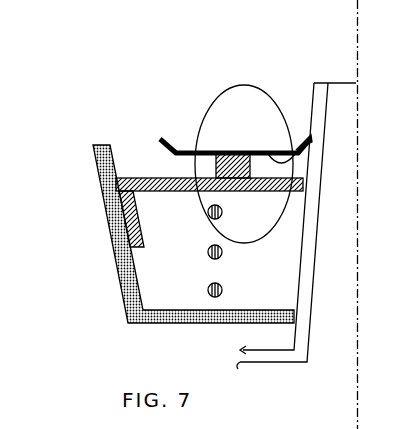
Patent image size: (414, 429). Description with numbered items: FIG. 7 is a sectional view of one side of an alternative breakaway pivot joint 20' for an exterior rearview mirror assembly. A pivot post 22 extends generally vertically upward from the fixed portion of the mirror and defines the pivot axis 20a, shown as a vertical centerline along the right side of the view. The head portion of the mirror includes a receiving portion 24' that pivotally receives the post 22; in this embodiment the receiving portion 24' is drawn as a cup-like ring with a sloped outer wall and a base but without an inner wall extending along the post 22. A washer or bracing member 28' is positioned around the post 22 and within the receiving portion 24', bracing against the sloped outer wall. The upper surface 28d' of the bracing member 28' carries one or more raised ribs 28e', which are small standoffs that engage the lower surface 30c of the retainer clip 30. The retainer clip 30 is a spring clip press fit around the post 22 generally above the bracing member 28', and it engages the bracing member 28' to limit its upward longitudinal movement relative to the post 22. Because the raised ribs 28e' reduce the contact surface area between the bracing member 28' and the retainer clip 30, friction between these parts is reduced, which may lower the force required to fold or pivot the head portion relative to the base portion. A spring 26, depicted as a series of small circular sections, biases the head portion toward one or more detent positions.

The breakaway joint 20' is at (220, 145).
The pivot axis 20a is at (356, 21).
The pivot post 22 is at (293, 357).
The receiving portion 24' is at (183, 250).
The spring 26 is at (222, 286).
The bracing member 28' is at (209, 203).
The upper surface 28d' is at (120, 175).
The raised ribs 28e' is at (237, 139).
The retainer clip 30 is at (182, 138).
The lower surface 30c is at (304, 140).